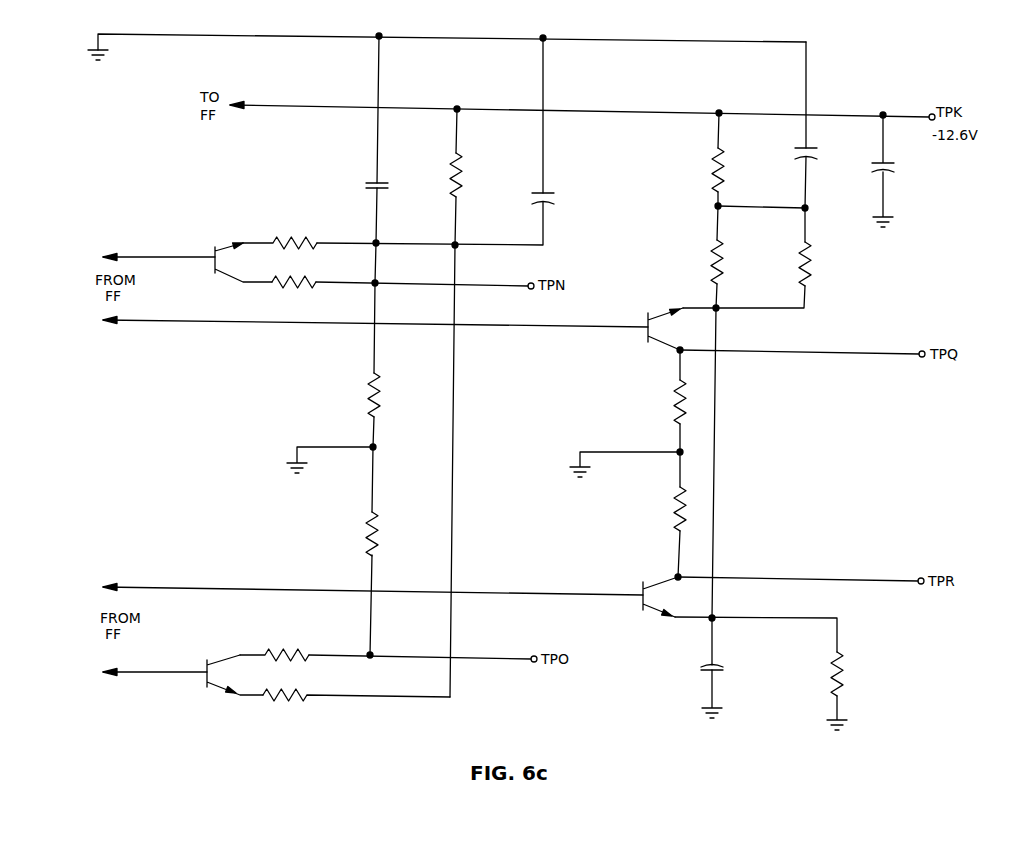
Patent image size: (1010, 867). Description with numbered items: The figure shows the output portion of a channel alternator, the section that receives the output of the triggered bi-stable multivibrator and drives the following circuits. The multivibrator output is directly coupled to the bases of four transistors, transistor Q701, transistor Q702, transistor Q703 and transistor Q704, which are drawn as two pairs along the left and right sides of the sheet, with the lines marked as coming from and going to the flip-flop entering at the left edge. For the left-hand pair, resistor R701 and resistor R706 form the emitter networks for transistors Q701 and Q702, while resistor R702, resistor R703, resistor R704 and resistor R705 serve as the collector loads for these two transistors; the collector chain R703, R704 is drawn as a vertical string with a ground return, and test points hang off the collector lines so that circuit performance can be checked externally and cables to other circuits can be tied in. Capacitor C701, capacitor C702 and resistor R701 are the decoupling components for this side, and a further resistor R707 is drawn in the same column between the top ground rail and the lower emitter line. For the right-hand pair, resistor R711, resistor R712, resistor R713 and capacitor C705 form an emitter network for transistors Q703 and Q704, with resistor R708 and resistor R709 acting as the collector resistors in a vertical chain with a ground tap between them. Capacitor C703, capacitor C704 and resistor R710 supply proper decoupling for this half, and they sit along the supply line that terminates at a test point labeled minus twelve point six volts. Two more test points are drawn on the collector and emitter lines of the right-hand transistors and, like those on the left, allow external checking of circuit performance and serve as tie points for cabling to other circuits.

The capacitor C701 is at (366, 183).
The capacitor C702 is at (549, 190).
The capacitor C703 is at (797, 158).
The capacitor C704 is at (890, 167).
The capacitor C705 is at (720, 668).
The resistor R701 is at (300, 232).
The resistor R702 is at (293, 288).
The resistor R703 is at (367, 383).
The resistor R704 is at (367, 516).
The resistor R705 is at (298, 649).
The resistor R706 is at (265, 703).
The resistor R707 is at (462, 165).
The resistor R708 is at (675, 388).
The resistor R709 is at (673, 510).
The resistor R710 is at (713, 164).
The resistor R711 is at (711, 251).
The resistor R712 is at (841, 660).
The resistor R713 is at (811, 252).
The transistor Q701 is at (220, 257).
The transistor Q702 is at (212, 672).
The transistor Q703 is at (655, 327).
The transistor Q704 is at (650, 596).